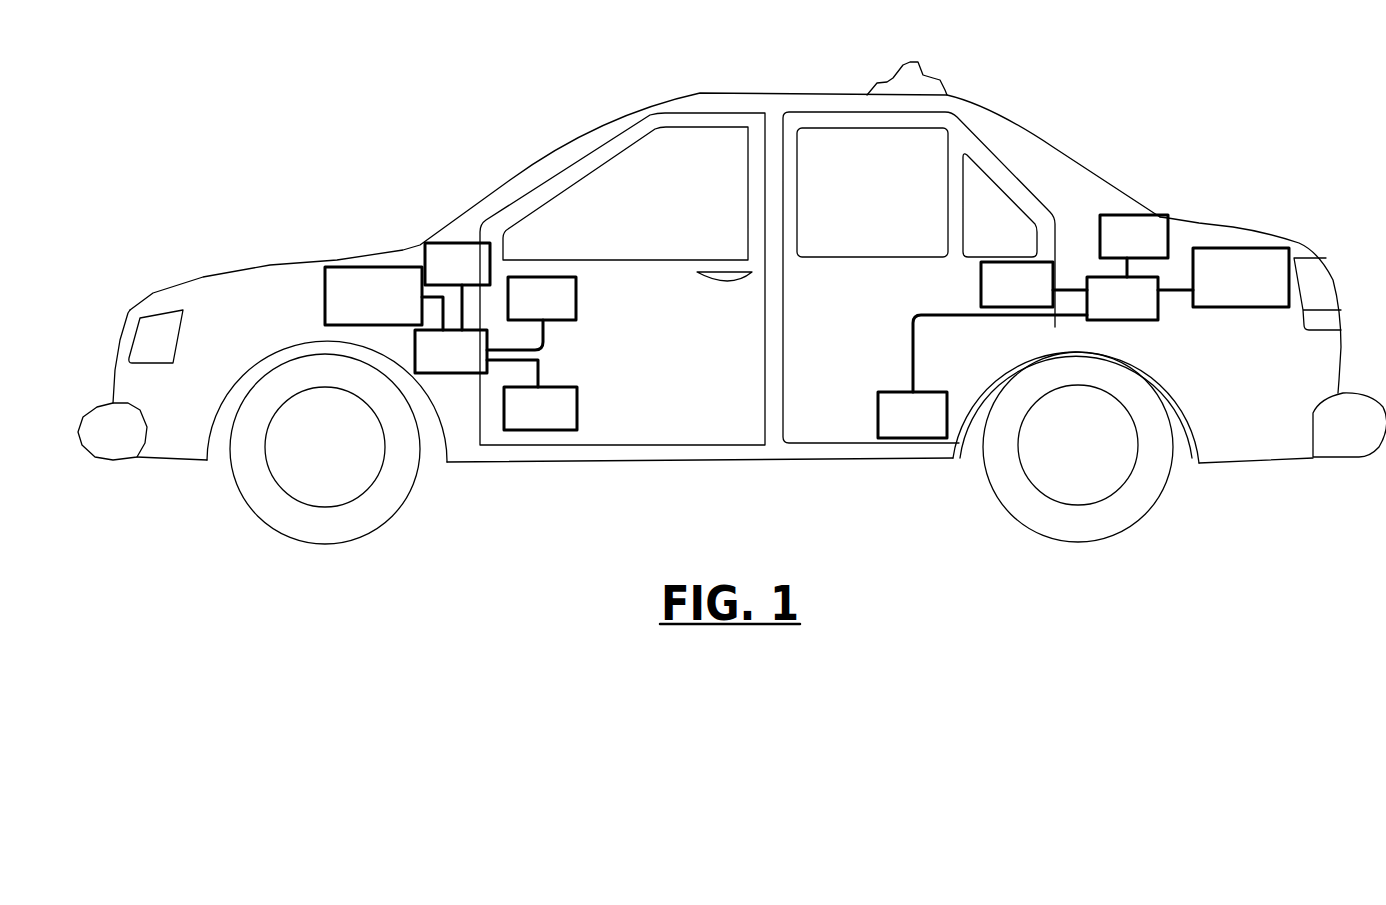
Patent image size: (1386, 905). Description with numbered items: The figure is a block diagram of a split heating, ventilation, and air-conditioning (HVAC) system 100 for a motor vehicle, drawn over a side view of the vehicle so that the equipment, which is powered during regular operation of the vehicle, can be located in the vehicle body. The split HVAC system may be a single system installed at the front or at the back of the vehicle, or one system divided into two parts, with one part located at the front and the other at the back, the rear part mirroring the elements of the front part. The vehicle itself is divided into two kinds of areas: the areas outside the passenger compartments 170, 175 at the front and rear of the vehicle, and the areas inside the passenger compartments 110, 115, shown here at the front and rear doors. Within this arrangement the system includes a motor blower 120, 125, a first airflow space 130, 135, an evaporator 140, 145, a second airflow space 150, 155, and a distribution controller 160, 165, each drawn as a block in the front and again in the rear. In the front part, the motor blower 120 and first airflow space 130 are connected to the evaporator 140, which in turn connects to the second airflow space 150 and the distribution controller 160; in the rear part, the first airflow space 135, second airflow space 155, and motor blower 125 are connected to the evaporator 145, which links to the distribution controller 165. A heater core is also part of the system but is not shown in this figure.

The split heating, ventilation, and air-conditioning (HVAC) system 100 is at (199, 62).
The area inside passenger compartment 110 is at (657, 209).
The area inside passenger compartment 115 is at (864, 209).
The motor blower 120 is at (352, 307).
The motor blower 125 is at (1220, 289).
The first airflow space 130 is at (438, 277).
The first airflow space 135 is at (1112, 249).
The evaporator 140 is at (430, 364).
The evaporator 145 is at (1101, 309).
The second airflow space 150 is at (521, 310).
The second airflow space 155 is at (995, 297).
The distribution controller 160 is at (519, 420).
The distribution controller 165 is at (892, 427).
The area outside passenger compartment 170 is at (226, 315).
The area outside passenger compartment 175 is at (1247, 402).